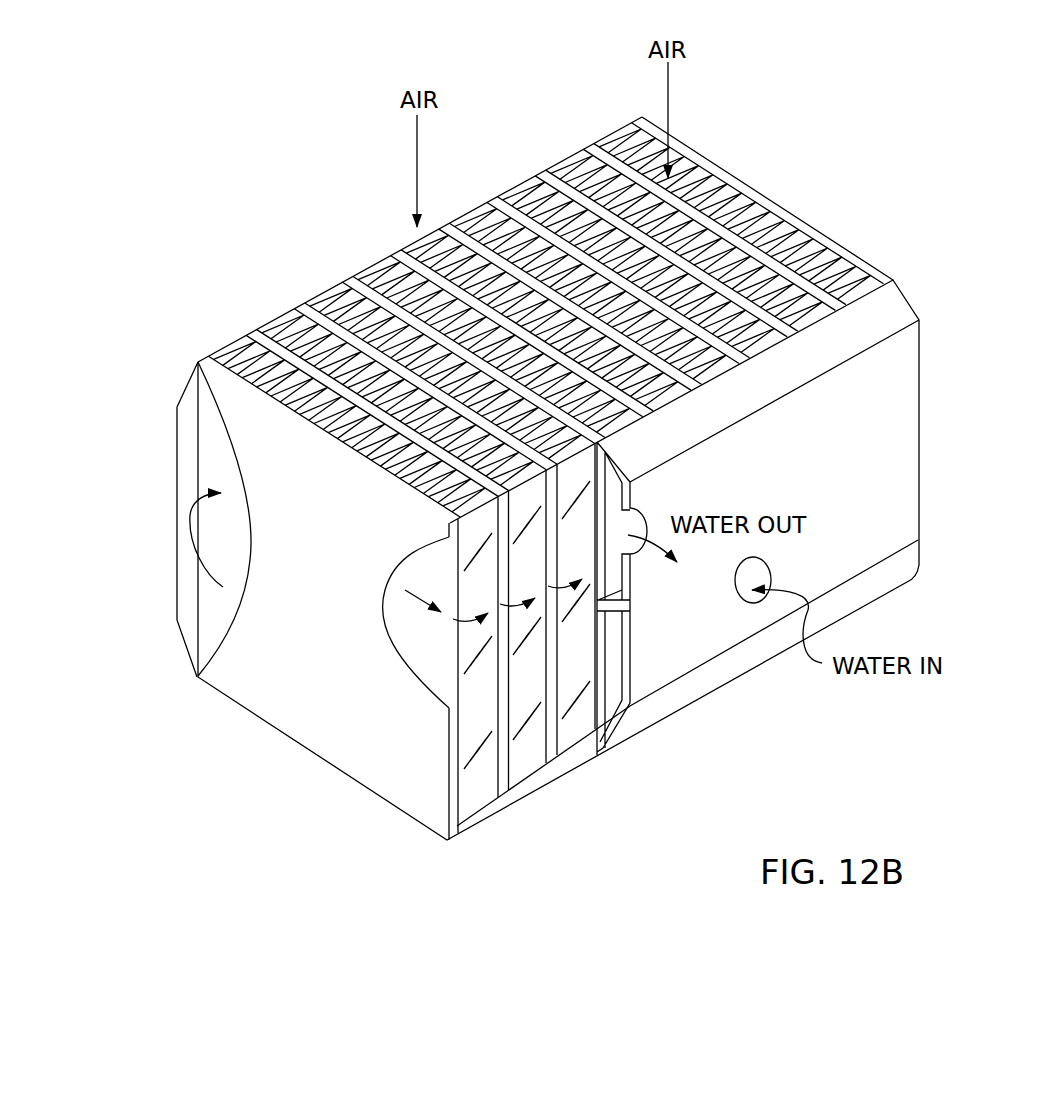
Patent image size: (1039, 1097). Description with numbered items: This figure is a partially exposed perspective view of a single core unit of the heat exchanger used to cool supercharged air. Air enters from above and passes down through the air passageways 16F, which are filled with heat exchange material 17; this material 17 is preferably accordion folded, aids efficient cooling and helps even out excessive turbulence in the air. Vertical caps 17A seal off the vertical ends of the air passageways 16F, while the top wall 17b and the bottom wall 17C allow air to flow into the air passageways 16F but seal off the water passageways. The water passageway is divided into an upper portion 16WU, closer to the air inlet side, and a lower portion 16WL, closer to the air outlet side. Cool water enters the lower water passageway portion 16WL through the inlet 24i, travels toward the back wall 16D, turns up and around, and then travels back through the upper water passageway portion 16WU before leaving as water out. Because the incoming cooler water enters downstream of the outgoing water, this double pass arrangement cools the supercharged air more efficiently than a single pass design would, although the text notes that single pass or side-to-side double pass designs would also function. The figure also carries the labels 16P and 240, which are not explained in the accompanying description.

The heat exchange material 17 is at (245, 357).
The vertical cap 17A is at (478, 787).
The top wall 17b is at (488, 198).
The bottom wall 17C is at (313, 757).
The plate 16P is at (327, 292).
The air passageway 16F is at (300, 340).
The upper water passageway portion 16WU is at (213, 463).
The lower water passageway portion 16WL is at (197, 623).
The back wall 16D is at (170, 583).
The water outlet header 240 is at (644, 512).
The inlet 24i is at (771, 572).